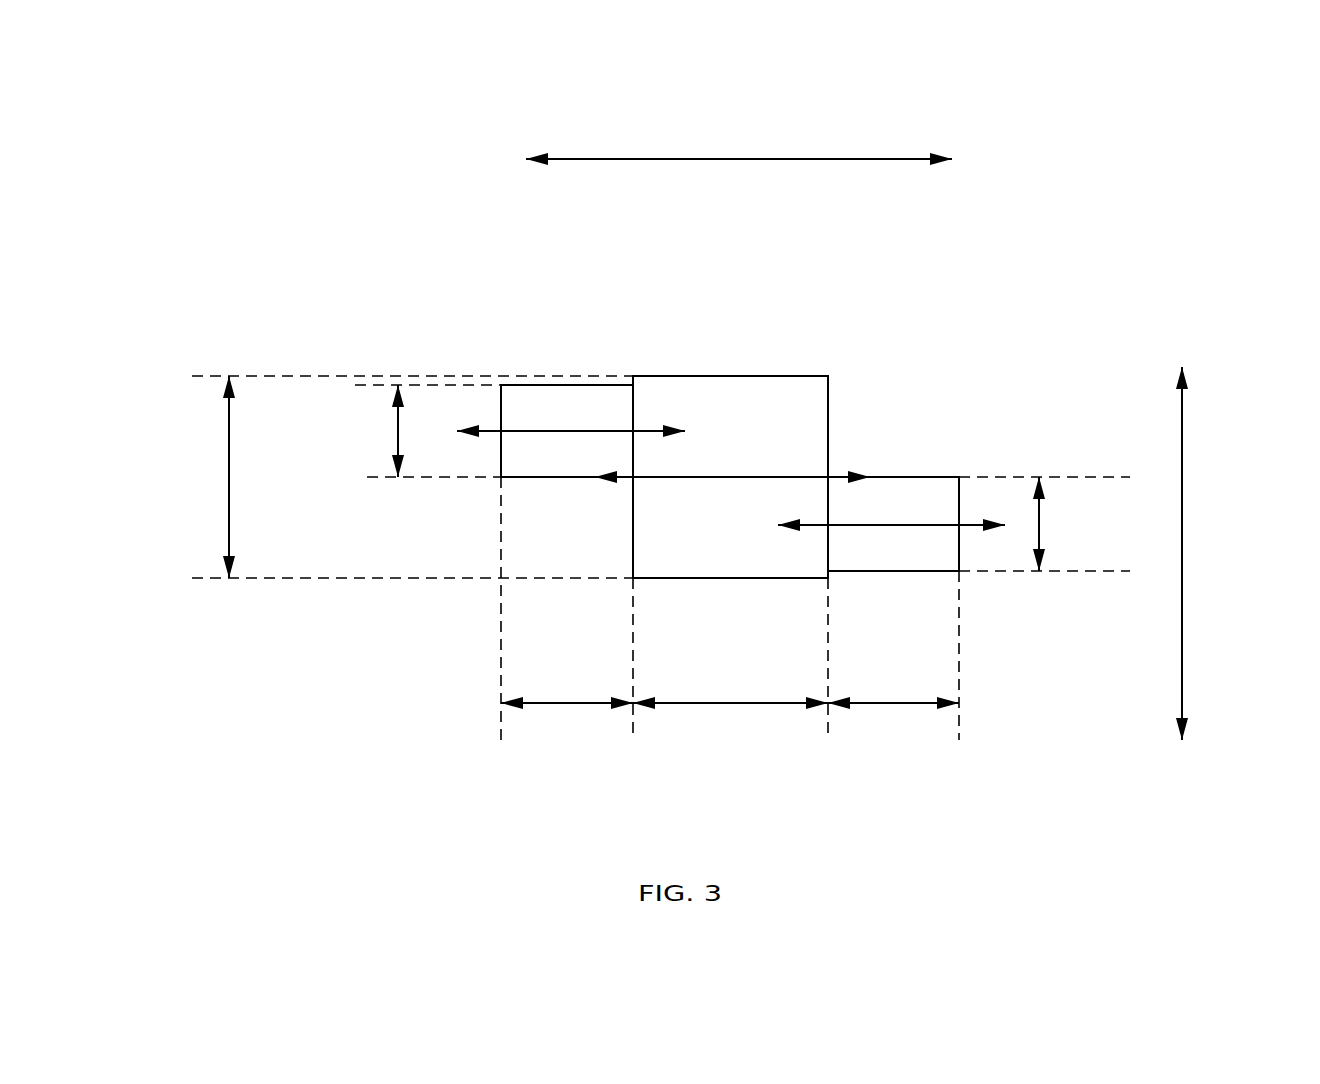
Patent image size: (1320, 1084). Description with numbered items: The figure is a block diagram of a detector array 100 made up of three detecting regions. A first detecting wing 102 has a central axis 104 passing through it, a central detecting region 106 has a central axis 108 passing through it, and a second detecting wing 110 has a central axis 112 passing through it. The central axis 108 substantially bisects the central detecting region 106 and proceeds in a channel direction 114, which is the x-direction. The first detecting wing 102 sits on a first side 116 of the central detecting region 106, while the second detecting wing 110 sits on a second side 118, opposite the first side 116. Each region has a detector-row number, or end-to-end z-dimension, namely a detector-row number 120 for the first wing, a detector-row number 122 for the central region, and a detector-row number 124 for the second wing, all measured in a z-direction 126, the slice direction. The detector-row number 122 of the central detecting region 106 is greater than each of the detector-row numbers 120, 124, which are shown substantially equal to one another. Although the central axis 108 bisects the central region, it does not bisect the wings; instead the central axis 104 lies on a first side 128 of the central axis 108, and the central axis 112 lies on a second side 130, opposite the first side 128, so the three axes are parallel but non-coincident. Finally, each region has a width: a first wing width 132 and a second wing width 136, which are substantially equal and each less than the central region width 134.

The detector array 100 is at (975, 264).
The first detecting wing 102 is at (561, 375).
The central axis 104 is at (562, 432).
The central detecting region 106 is at (730, 376).
The central axis 108 is at (682, 477).
The second detecting wing 110 is at (922, 477).
The central axis 112 is at (887, 525).
The channel direction 114 is at (741, 159).
The first side 116 is at (555, 270).
The second side 118 is at (903, 400).
The detector-row number 120 is at (398, 433).
The detector-row number 122 is at (229, 468).
The detector-row number 124 is at (1039, 525).
The z-direction 126 is at (1182, 545).
The first side 128 is at (733, 443).
The second side 130 is at (719, 525).
The first wing width 132 is at (565, 705).
The central region width 134 is at (730, 705).
The second wing width 136 is at (895, 705).